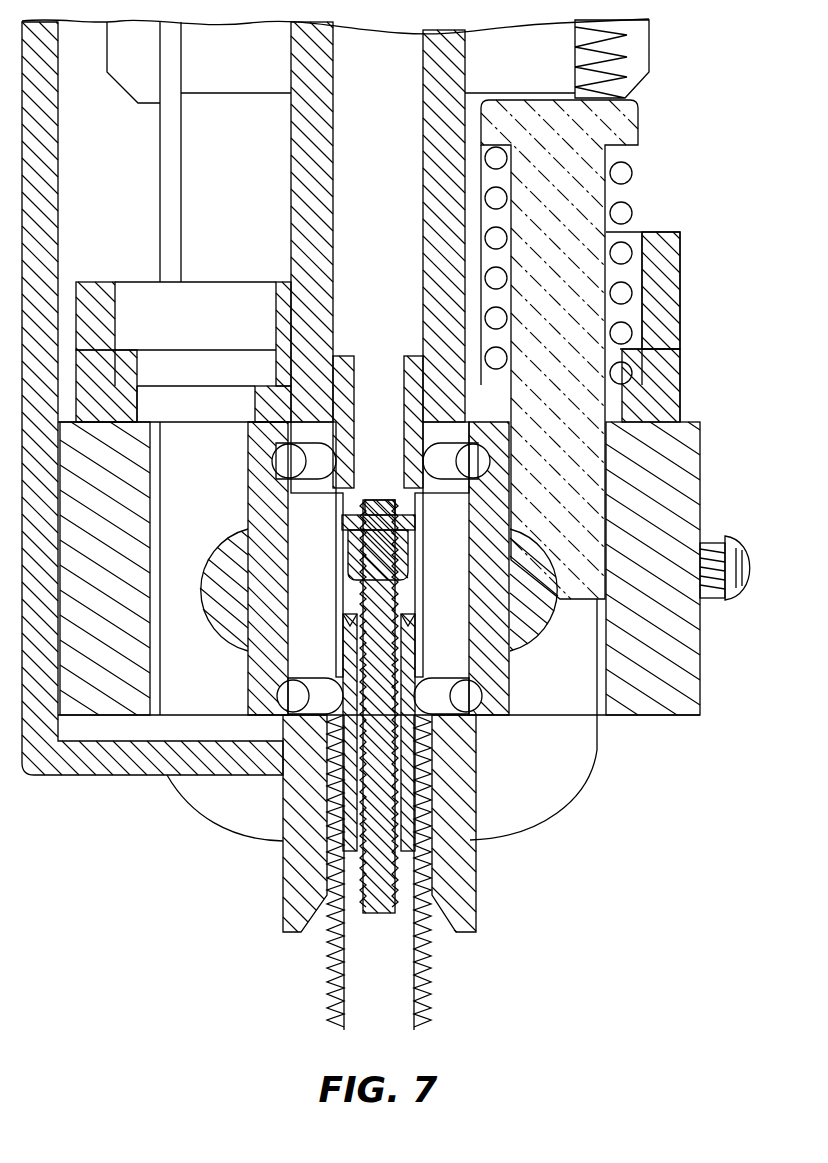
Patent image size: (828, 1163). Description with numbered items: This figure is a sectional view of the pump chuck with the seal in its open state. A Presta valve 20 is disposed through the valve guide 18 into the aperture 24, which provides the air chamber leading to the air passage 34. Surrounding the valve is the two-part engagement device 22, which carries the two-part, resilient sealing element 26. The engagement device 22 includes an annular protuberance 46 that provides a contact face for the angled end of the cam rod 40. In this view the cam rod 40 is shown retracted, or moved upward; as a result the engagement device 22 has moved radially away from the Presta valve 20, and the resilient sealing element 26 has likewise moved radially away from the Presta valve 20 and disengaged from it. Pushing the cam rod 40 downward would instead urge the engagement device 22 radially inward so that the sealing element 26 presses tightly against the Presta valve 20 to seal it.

The valve guide 18 is at (293, 897).
The Presta valve 20 is at (500, 922).
The engagement device 22 is at (240, 609).
The aperture 24 is at (407, 602).
The sealing element 26 is at (272, 466).
The air passage 34 is at (366, 274).
The cam rod 40 is at (579, 511).
The annular protuberance 46 is at (557, 607).